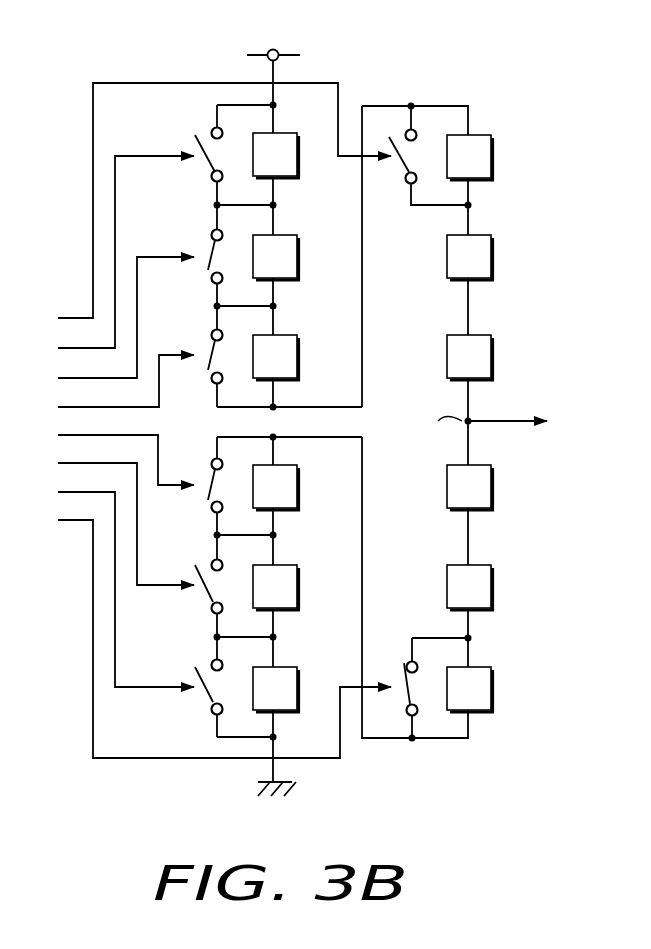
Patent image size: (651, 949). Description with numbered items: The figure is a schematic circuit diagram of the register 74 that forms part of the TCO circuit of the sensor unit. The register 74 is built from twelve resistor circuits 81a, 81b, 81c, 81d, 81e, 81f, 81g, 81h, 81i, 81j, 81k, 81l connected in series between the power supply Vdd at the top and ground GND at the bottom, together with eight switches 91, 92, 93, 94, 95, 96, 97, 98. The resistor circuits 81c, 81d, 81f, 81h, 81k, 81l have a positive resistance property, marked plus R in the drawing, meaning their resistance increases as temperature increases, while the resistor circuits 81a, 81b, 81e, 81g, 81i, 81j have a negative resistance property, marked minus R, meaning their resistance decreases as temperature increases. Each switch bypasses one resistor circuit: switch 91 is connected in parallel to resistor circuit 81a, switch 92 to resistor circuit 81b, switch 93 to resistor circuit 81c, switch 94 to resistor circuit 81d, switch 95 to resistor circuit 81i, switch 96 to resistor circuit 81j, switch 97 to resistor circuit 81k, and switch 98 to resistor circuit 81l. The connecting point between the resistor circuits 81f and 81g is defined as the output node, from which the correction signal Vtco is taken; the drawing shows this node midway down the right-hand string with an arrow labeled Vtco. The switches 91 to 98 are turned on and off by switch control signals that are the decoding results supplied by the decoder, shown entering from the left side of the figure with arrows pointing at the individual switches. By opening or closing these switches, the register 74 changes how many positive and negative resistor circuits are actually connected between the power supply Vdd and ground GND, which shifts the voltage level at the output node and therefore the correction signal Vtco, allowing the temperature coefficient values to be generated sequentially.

The register 74 is at (510, 51).
The resistor circuit 81a is at (298, 163).
The resistor circuit 81b is at (298, 256).
The resistor circuit 81c is at (298, 357).
The resistor circuit 81d is at (492, 155).
The resistor circuit 81e is at (492, 255).
The resistor circuit 81f is at (492, 357).
The resistor circuit 81g is at (492, 487).
The resistor circuit 81h is at (492, 587).
The resistor circuit 81i is at (492, 686).
The resistor circuit 81j is at (298, 486).
The resistor circuit 81k is at (298, 588).
The resistor circuit 81l is at (298, 672).
The switch 91 is at (207, 163).
The switch 92 is at (211, 262).
The switch 93 is at (211, 362).
The switch 94 is at (398, 168).
The switch 95 is at (402, 680).
The switch 96 is at (211, 490).
The switch 97 is at (204, 592).
The switch 98 is at (198, 696).